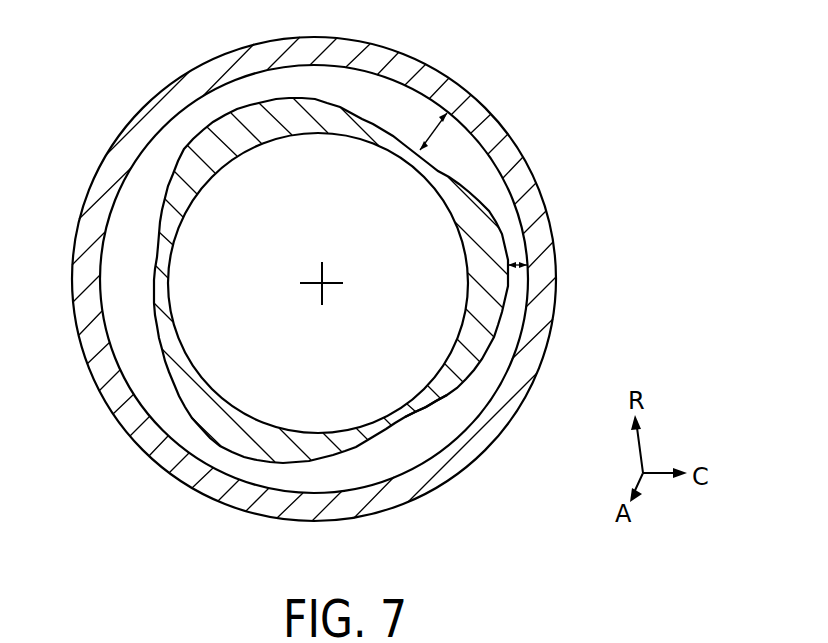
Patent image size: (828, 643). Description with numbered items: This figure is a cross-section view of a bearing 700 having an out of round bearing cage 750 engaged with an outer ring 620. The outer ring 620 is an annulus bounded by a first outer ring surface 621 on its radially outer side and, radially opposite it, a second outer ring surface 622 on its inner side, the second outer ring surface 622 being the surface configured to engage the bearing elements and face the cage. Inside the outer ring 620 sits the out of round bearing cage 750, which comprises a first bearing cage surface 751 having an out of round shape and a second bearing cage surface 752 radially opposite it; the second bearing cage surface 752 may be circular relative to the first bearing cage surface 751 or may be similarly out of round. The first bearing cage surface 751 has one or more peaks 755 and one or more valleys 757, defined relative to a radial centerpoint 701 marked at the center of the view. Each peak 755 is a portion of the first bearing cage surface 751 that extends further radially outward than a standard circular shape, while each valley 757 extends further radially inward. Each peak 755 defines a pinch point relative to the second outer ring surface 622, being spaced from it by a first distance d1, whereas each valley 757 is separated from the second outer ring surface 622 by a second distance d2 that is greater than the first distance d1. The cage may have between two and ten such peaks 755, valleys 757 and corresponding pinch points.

The bearing 700 is at (602, 106).
The outer ring 620 is at (174, 89).
The first outer ring surface 621 is at (130, 120).
The second outer ring surface 622 is at (248, 70).
The out of round bearing cage 750 is at (475, 325).
The first bearing cage surface 751 is at (397, 420).
The second bearing cage surface 752 is at (427, 388).
The peak 755 is at (212, 155).
The valley 757 is at (403, 165).
The radial centerpoint 701 is at (322, 282).
The first distance d1 is at (523, 257).
The second distance d2 is at (434, 132).